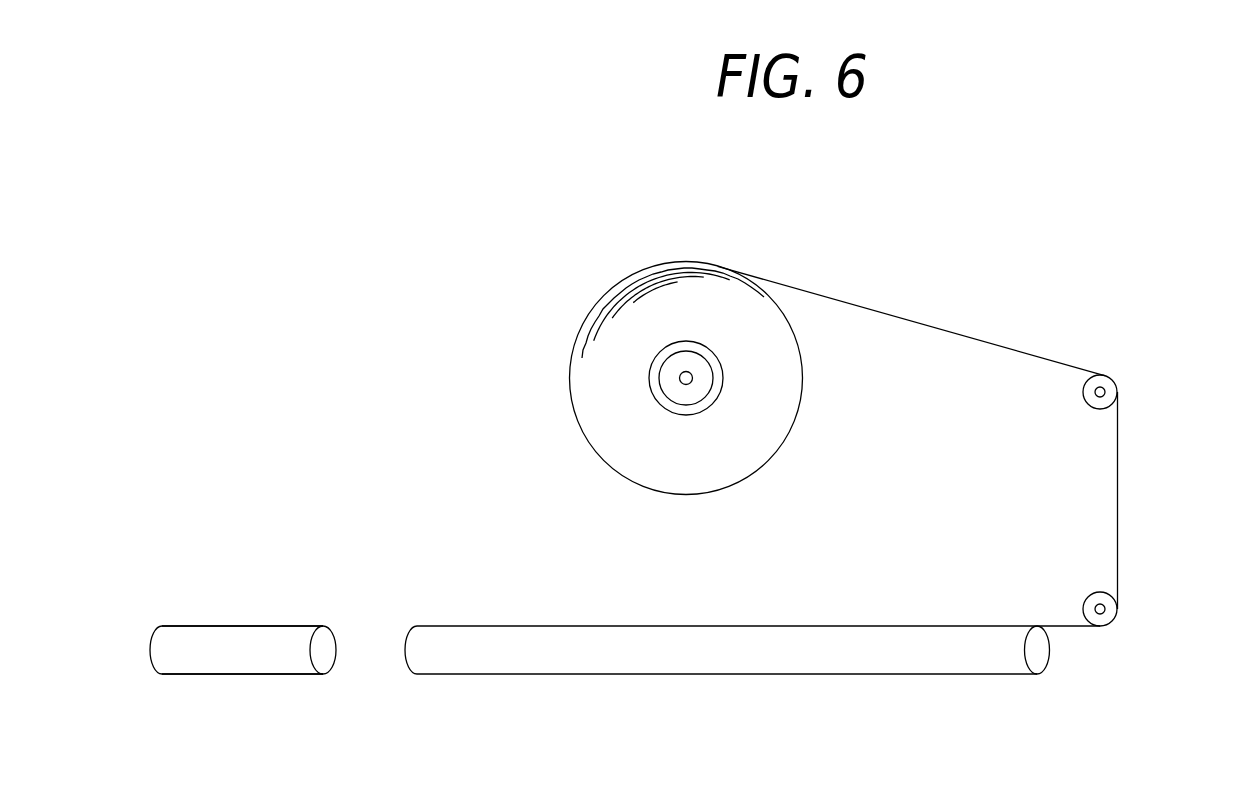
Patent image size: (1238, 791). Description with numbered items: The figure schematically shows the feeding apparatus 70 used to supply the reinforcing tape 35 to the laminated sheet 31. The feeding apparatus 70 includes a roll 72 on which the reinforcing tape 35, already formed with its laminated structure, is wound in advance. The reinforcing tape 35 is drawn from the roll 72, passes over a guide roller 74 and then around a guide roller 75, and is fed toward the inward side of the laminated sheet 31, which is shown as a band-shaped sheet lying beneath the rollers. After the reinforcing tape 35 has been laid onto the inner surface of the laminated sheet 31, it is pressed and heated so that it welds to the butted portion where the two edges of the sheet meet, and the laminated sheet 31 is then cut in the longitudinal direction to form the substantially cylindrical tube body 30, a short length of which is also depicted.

The feeding apparatus 70 is at (1038, 289).
The roll 72 is at (635, 460).
The guide roller 74 is at (1133, 375).
The guide roller 75 is at (1130, 629).
The reinforcing tape 35 is at (1118, 500).
The tube body 30 is at (244, 618).
The laminated sheet 31 is at (262, 657).